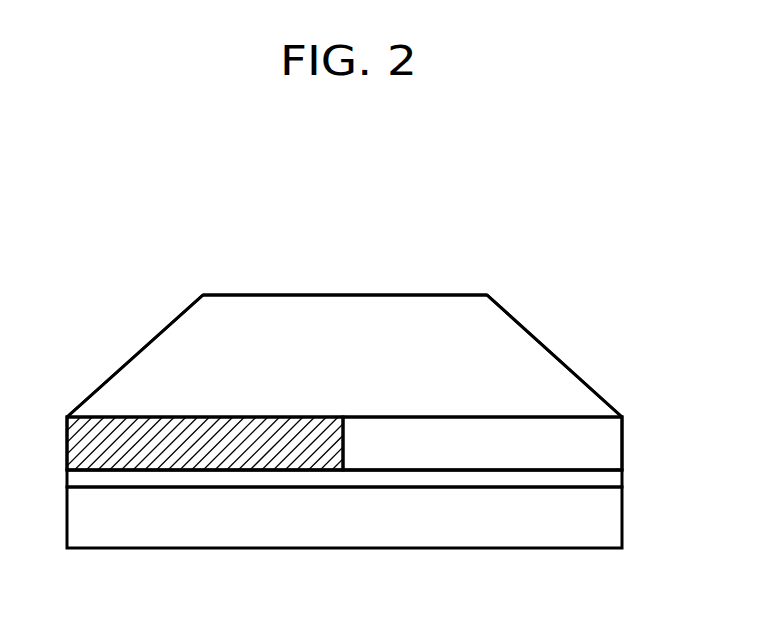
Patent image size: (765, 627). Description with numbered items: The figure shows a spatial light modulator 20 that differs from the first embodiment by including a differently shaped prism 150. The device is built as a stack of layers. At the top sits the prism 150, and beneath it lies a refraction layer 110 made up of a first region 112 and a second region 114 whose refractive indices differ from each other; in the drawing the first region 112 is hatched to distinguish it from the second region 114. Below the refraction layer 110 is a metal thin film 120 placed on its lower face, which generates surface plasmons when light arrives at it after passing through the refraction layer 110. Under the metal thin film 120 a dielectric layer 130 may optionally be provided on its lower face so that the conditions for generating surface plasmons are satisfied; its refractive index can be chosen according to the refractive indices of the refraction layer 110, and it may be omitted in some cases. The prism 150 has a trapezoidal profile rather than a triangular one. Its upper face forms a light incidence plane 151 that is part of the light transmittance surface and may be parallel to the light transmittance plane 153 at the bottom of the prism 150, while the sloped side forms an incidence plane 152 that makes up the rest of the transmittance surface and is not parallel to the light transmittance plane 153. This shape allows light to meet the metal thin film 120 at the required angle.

The spatial light modulator 20 is at (120, 205).
The refraction layer 110 is at (352, 506).
The first region 112 is at (205, 465).
The second region 114 is at (483, 462).
The metal thin film 120 is at (615, 480).
The dielectric layer 130 is at (615, 525).
The prism 150 is at (565, 383).
The light incidence plane 151 is at (322, 295).
The incidence plane 152 is at (146, 345).
The light transmittance plane 153 is at (485, 417).